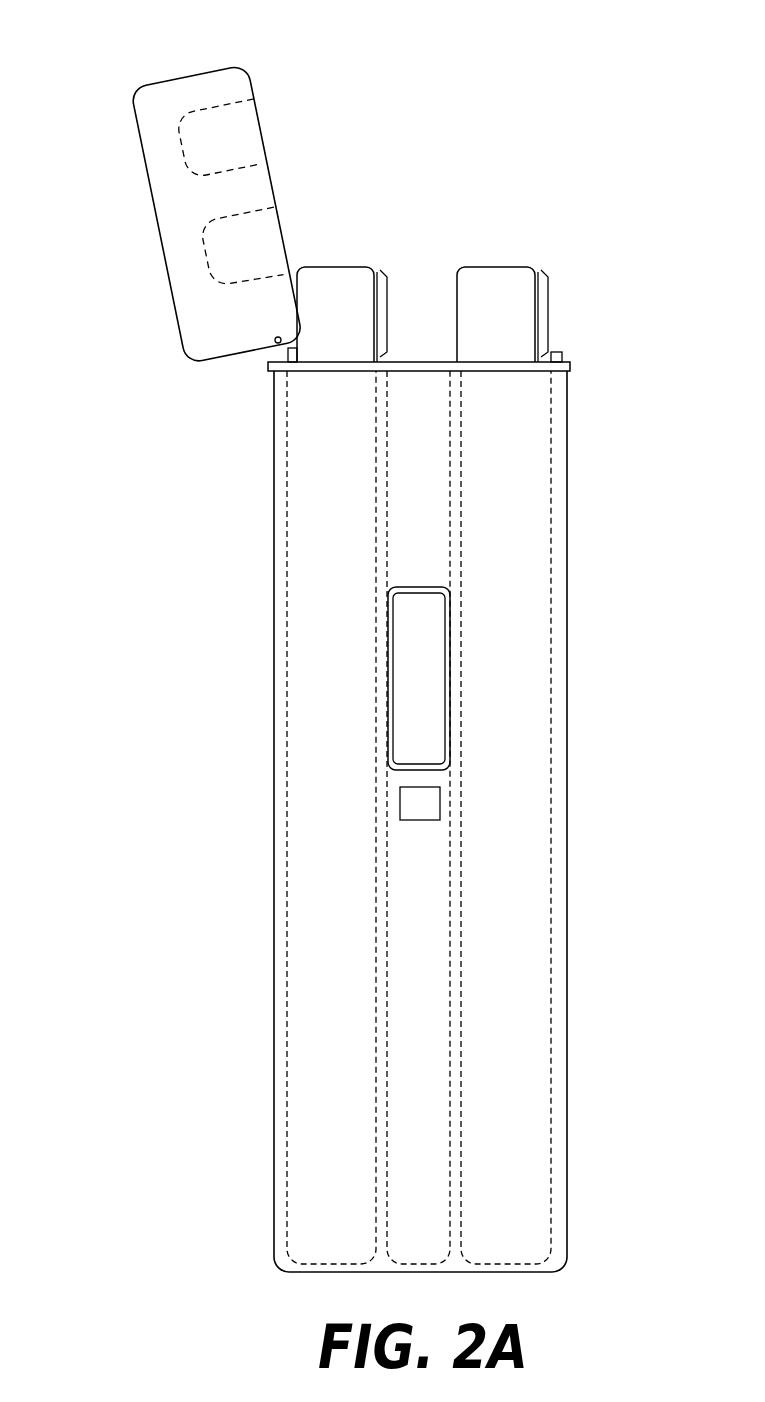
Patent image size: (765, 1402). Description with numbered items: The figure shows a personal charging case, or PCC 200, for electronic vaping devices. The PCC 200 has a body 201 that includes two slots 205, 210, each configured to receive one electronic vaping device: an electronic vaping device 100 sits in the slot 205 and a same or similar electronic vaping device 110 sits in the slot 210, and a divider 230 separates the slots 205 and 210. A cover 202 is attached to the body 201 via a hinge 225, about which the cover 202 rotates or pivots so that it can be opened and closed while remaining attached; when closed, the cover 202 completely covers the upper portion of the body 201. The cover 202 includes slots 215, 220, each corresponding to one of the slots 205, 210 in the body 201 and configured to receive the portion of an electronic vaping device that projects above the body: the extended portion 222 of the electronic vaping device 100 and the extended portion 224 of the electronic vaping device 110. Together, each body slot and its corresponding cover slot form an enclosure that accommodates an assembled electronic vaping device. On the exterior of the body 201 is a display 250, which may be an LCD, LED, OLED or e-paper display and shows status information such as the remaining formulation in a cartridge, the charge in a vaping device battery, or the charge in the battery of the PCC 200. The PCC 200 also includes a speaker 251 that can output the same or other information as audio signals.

The electronic vaping device 100 is at (336, 267).
The electronic vaping device 110 is at (494, 267).
The PCC 200 is at (141, 806).
The body element 201 is at (275, 1071).
The cover element 202 is at (143, 87).
The slot 205 is at (286, 475).
The slot 210 is at (553, 473).
The slot 215 is at (207, 270).
The slot 220 is at (182, 148).
The extended portion 222 is at (387, 317).
The extended portion 224 is at (548, 317).
The hinge 225 is at (272, 342).
The divider 230 is at (453, 543).
The display 250 is at (450, 756).
The speaker 251 is at (440, 814).